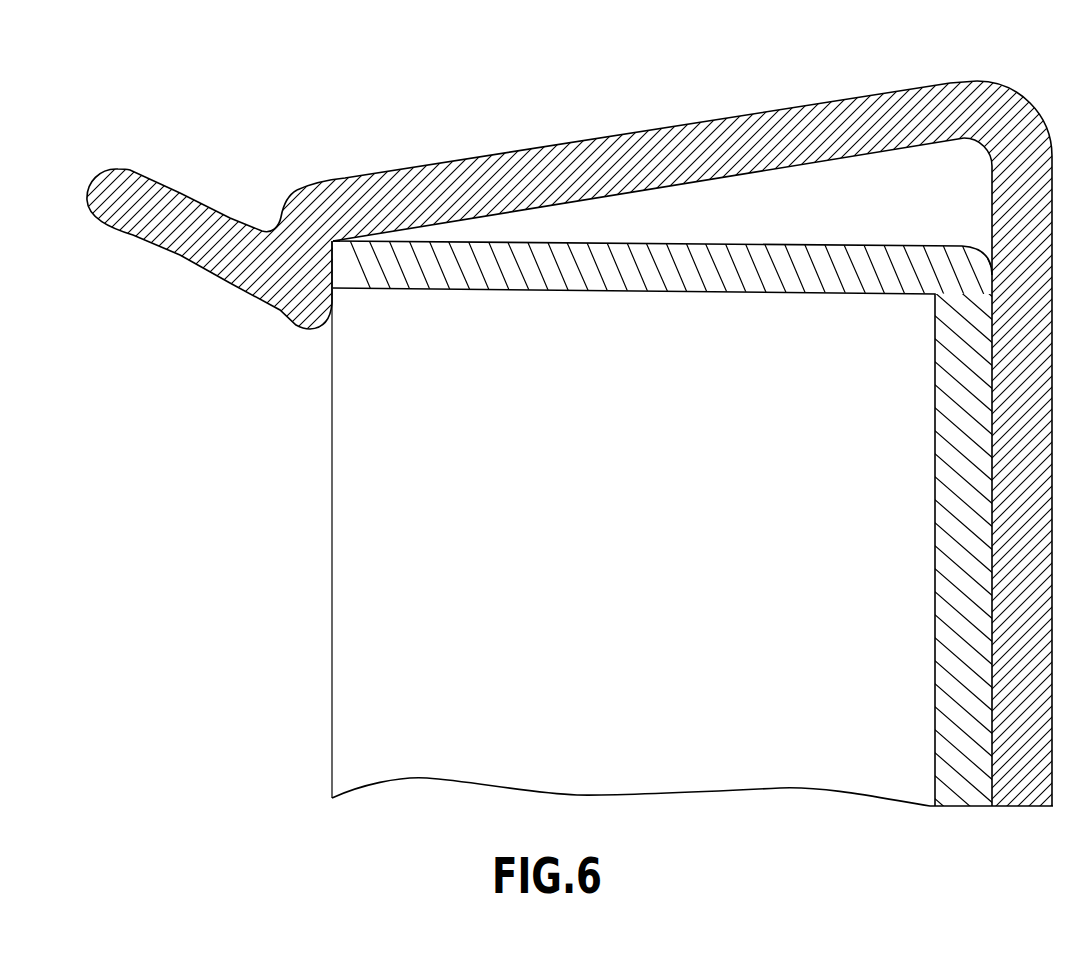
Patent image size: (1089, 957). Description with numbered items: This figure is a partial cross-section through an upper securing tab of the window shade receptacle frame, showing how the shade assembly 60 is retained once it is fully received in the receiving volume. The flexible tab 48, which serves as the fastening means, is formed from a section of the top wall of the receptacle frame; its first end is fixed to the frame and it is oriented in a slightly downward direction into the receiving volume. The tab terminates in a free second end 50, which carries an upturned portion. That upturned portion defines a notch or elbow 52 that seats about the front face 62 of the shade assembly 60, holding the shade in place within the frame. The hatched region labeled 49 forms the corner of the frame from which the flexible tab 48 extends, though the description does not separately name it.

The flexible tab 48 is at (553, 145).
The rounded corner / wall of clip 49 is at (978, 82).
The free second end 50 is at (88, 190).
The notch 52 is at (335, 240).
The shade assembly 60 is at (707, 243).
The front face 62 is at (347, 270).